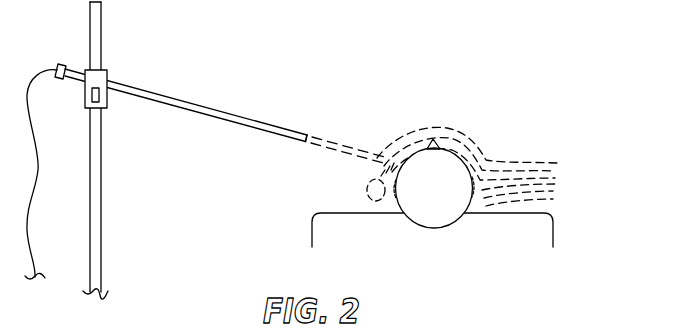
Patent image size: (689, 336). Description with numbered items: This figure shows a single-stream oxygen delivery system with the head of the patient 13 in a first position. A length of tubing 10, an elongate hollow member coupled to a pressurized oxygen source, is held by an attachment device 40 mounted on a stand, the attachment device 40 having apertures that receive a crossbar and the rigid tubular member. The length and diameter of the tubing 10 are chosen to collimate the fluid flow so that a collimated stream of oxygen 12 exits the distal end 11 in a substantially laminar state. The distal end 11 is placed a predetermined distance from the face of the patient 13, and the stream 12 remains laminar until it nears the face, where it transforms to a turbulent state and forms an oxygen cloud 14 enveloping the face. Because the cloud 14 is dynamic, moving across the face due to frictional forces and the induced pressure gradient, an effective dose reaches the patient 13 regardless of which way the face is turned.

The length of tubing 10 is at (232, 113).
The distal end 11 is at (307, 148).
The collimated stream of oxygen 12 is at (333, 146).
The patient 13 is at (430, 141).
The oxygen cloud 14 is at (480, 154).
The attachment device 40 is at (86, 70).